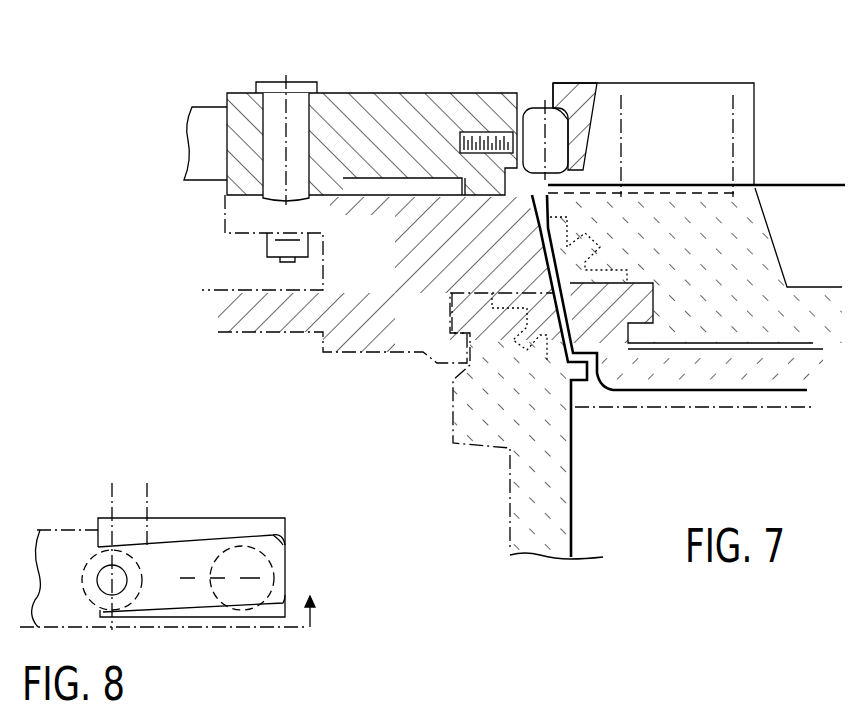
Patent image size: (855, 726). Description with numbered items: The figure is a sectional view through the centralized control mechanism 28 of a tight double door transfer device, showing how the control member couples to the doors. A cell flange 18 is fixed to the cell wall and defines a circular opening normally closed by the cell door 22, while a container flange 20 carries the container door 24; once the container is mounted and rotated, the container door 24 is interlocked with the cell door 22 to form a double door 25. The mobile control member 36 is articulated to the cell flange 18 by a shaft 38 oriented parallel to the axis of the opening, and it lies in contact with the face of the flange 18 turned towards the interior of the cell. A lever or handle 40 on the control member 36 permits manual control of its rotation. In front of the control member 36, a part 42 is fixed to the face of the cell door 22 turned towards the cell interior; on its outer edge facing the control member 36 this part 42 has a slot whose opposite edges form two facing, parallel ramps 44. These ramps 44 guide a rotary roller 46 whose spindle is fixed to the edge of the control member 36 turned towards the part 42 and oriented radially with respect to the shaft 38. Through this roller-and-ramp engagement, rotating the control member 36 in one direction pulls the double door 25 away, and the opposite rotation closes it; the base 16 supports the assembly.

In FIG. 7, the base 16 is at (513, 527).
In FIG. 7, the cell flange 18 is at (365, 308).
In FIG. 7, the container flange 20 is at (455, 390).
In FIG. 7, the cell door 22 is at (770, 268).
In FIG. 7, the container door 24 is at (777, 372).
In FIG. 7, the double door 25 is at (807, 185).
In FIG. 7, the centralized control mechanism 28 is at (455, 72).
In FIG. 7, the mobile control member 36 is at (358, 105).
In FIG. 7, the shaft 38 is at (270, 148).
In FIG. 7, the lever or handle 40 is at (200, 190).
In FIG. 7, the part 42 is at (713, 93).
In FIG. 8, the part 42 is at (215, 525).
In FIG. 7, the ramps 44 is at (574, 170).
In FIG. 8, the ramps 44 is at (268, 545).
In FIG. 7, the rotary roller 46 is at (530, 100).
In FIG. 8, the rotary roller 46 is at (128, 562).